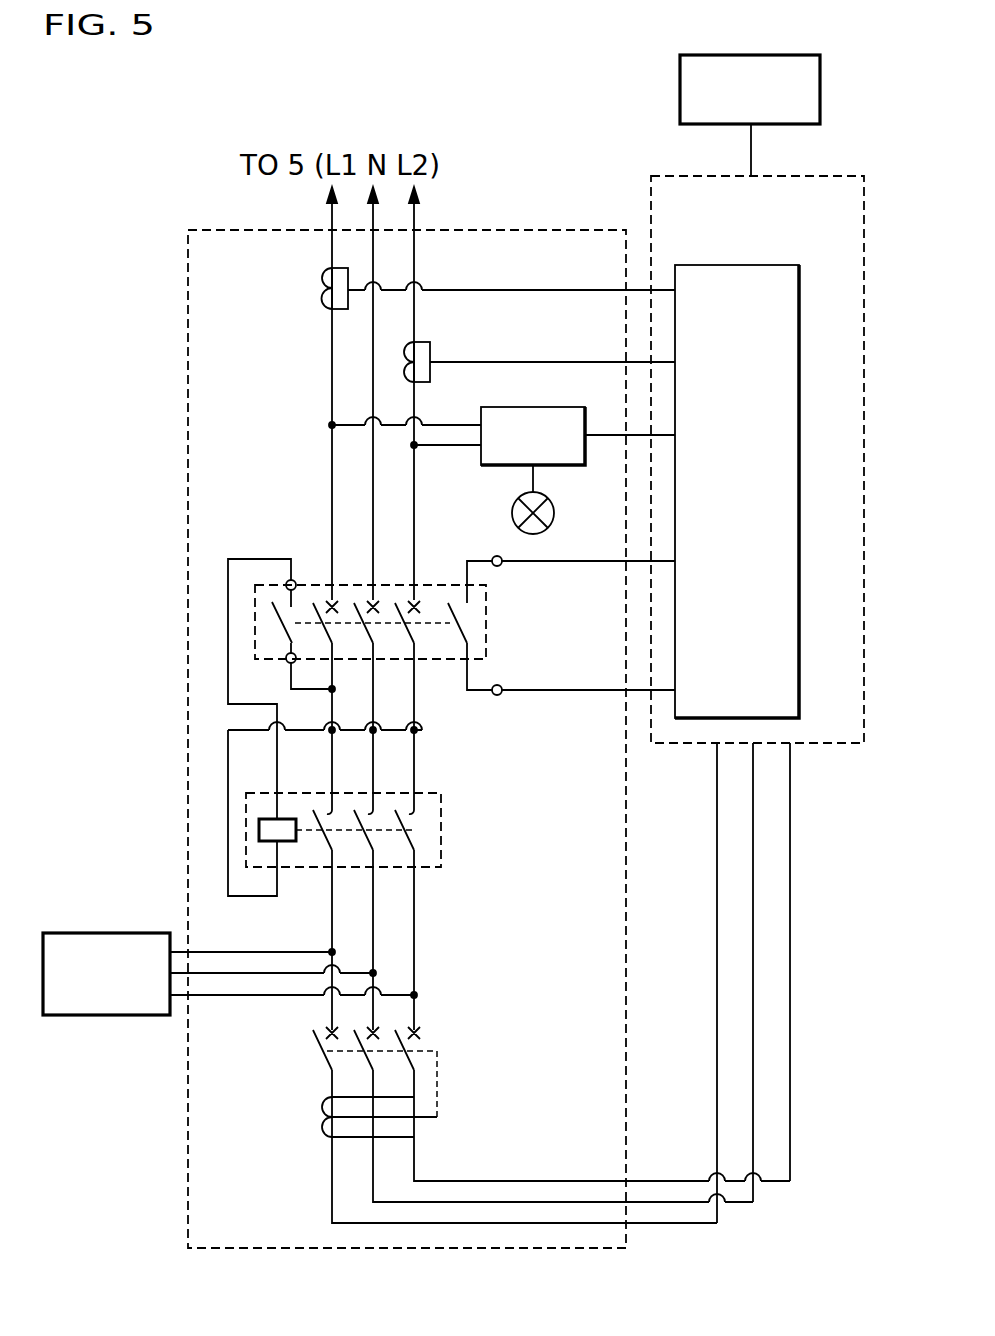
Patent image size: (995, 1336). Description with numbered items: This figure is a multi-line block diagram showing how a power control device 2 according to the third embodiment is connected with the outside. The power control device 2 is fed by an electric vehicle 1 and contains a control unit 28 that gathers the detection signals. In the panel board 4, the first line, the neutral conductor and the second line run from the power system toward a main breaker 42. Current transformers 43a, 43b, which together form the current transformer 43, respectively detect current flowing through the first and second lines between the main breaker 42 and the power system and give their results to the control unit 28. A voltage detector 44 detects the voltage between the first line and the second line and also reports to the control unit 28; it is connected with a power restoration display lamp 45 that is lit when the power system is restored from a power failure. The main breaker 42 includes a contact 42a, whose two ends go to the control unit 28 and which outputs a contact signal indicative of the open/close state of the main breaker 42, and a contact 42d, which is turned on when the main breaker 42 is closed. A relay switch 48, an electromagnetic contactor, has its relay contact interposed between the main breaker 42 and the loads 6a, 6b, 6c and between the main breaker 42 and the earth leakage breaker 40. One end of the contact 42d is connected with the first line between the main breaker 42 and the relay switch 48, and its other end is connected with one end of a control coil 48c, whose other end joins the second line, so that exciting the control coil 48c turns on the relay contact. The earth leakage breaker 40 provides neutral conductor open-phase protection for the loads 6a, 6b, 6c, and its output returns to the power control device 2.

The electric vehicle 1 is at (680, 98).
The power control device 2 is at (757, 438).
The panel board 4 is at (505, 230).
The control unit 28 is at (770, 265).
The earth leakage breaker 40 is at (318, 1115).
The main breaker 42 is at (450, 707).
The contact 42a is at (487, 621).
The contact 42d is at (270, 620).
The current transformer 43 is at (436, 326).
The current transformer 43a is at (320, 290).
The current transformer 43b is at (402, 362).
The voltage detector 44 is at (527, 407).
The power restoration display lamp 45 is at (555, 514).
The relay switch 48 is at (384, 864).
The control coil 48c is at (292, 843).
The load 6a is at (228, 1004).
The load 6b is at (228, 1004).
The load 6c is at (88, 1015).